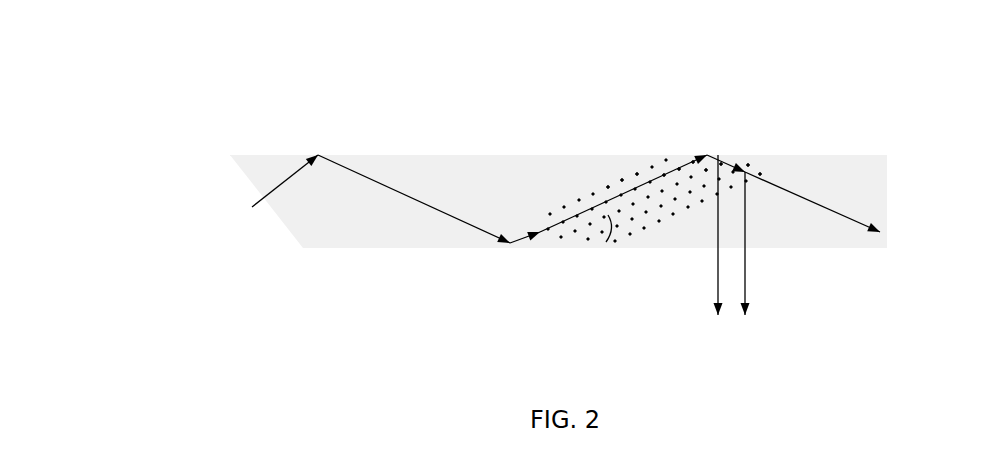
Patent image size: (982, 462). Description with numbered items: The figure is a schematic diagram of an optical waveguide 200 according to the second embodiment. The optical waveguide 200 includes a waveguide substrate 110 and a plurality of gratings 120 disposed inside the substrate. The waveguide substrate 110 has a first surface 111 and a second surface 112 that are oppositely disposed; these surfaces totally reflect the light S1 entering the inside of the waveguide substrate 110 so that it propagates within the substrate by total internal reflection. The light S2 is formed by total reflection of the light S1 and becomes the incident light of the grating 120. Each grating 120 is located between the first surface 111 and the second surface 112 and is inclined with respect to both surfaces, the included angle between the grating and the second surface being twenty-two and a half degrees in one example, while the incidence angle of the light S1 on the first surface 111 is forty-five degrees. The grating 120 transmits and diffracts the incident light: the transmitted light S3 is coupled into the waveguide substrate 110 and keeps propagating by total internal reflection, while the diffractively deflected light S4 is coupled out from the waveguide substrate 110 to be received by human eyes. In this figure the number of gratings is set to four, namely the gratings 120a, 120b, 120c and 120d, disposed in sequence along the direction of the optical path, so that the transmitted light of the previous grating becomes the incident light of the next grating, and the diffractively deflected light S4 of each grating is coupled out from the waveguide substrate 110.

The optical waveguide 200 is at (90, 58).
The waveguide substrate 110 is at (435, 250).
The first surface 111 is at (405, 155).
The second surface 112 is at (358, 250).
The grating 120 is at (583, 238).
The grating 120a is at (615, 183).
The grating 120b is at (675, 165).
The grating 120c is at (725, 155).
The grating 120d is at (760, 157).
The light S1 is at (282, 184).
The light S2 is at (530, 246).
The transmitted light S3 is at (632, 185).
The diffractively deflected light S4 is at (748, 265).